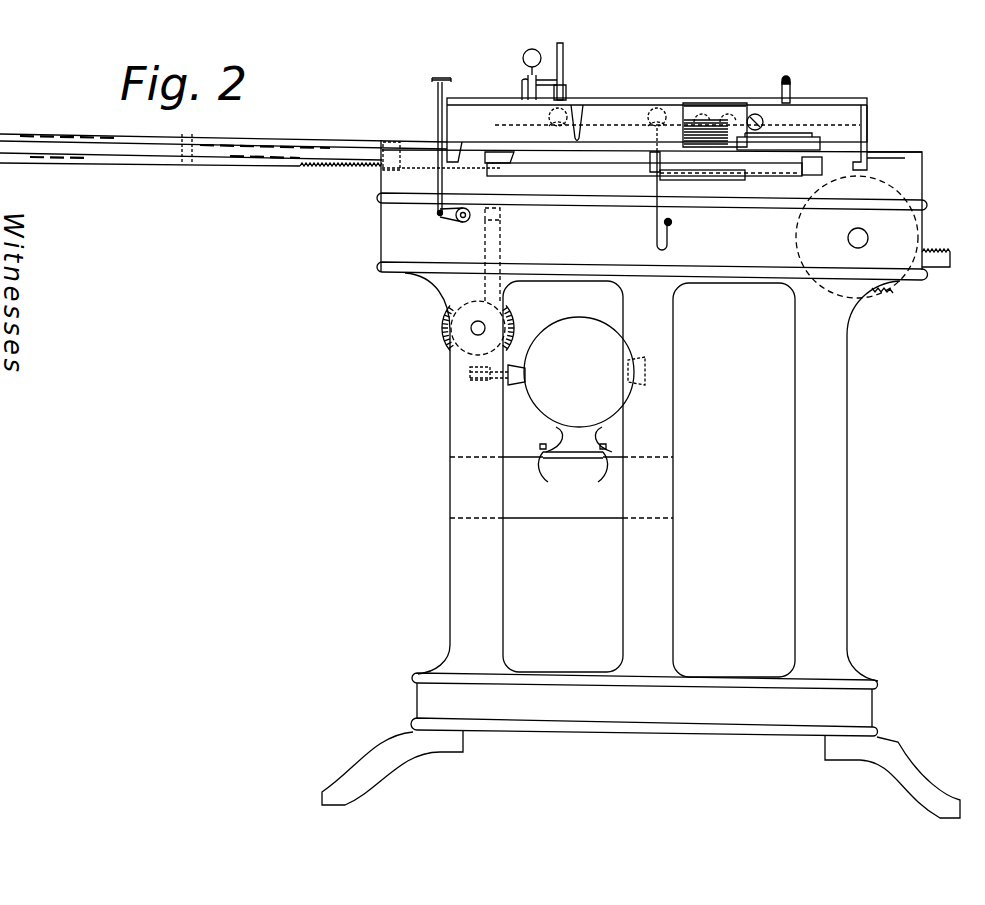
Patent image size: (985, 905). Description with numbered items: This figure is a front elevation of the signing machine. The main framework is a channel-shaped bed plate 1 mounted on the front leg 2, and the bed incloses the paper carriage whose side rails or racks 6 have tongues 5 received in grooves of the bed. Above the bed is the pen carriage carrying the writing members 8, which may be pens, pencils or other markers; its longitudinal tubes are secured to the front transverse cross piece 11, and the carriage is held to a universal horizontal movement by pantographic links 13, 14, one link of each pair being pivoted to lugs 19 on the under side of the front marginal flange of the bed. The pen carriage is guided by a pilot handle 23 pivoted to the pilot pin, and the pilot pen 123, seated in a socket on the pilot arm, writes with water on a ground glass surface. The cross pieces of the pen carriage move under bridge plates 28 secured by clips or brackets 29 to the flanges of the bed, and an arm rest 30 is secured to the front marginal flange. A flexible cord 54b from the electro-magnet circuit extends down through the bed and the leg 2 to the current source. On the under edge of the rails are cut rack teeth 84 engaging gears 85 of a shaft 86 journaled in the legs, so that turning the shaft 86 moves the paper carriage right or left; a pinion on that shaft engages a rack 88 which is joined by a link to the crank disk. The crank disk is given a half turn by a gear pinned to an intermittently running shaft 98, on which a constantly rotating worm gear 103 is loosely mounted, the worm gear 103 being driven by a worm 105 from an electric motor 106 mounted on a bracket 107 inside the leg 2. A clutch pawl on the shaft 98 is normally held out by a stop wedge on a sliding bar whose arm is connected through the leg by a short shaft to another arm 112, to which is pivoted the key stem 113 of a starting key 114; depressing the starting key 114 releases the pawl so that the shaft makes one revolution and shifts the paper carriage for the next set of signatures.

The bed plate 1 is at (392, 178).
The front leg 2 is at (641, 479).
The tongues 5 is at (170, 150).
The racks 6 is at (120, 158).
The writing members 8 is at (780, 92).
The front transverse cross piece 11 is at (791, 133).
The pantographic links 13 is at (582, 176).
The pantographic links 14 is at (770, 172).
The lugs 19 is at (653, 163).
The pilot handle 23 is at (566, 58).
The bridge plates 28 is at (830, 108).
The clips or brackets 29 is at (868, 125).
The arm rest 30 is at (657, 124).
The flexible cord 54b is at (655, 215).
The rack teeth 84 is at (330, 170).
The gears 85 is at (880, 295).
The shaft 86 is at (852, 243).
The rack 88 is at (958, 255).
The intermittently running shaft 98 is at (485, 325).
The worm gear 103 is at (445, 335).
The worm 105 is at (455, 390).
The electric motor 106 is at (576, 399).
The bracket 107 is at (561, 487).
The arm 112 is at (444, 218).
The key stem 113 is at (436, 88).
The starting key 114 is at (440, 75).
The pilot pen 123 is at (527, 70).